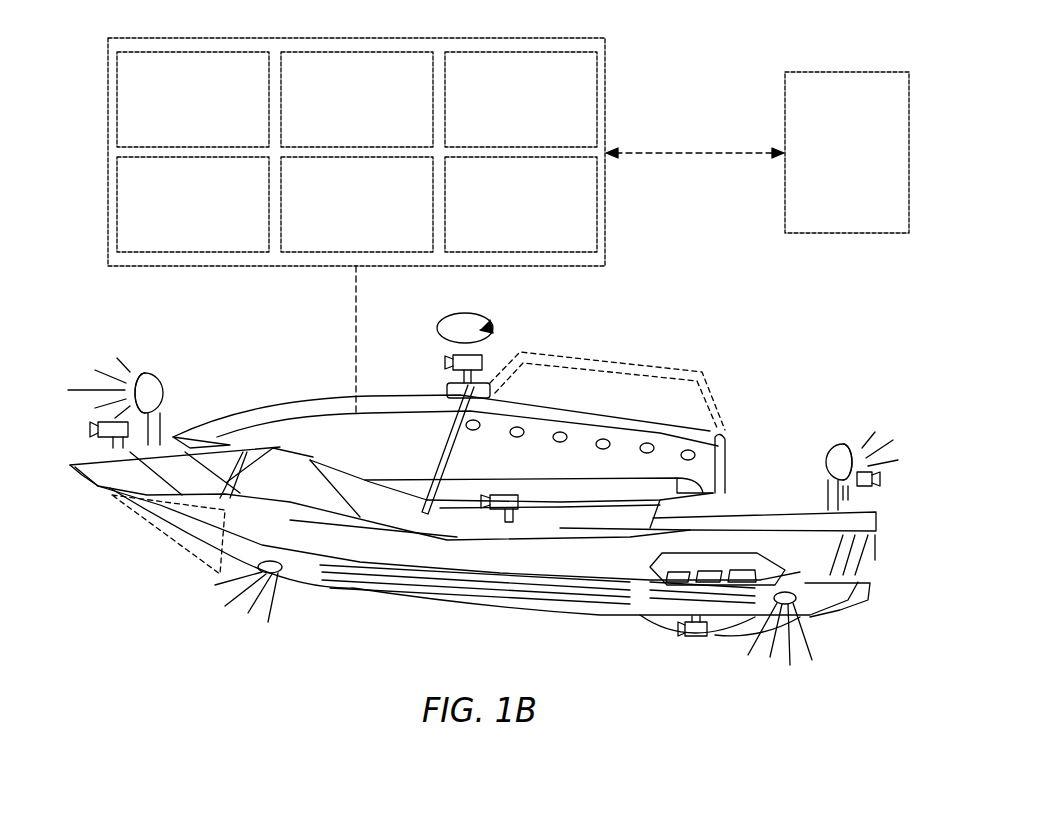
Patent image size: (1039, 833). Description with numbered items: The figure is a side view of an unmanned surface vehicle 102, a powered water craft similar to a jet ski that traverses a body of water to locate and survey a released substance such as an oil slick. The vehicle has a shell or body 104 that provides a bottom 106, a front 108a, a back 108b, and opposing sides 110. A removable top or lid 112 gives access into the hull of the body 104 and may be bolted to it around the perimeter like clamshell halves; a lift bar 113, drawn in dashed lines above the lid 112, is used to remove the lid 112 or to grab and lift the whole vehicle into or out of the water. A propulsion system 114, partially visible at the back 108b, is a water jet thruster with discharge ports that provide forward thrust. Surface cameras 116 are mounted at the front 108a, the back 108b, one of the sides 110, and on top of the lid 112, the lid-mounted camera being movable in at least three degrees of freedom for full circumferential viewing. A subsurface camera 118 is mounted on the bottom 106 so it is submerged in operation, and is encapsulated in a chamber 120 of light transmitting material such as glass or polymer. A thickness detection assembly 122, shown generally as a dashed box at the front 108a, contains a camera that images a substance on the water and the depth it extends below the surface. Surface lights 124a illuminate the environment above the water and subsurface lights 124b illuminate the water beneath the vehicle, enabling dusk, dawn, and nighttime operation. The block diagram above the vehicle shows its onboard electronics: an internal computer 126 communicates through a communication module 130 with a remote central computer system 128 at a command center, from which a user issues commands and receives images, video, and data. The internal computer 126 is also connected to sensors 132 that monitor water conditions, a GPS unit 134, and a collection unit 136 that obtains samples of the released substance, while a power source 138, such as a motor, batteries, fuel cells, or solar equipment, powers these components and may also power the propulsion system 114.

The unmanned surface vehicle 102 is at (126, 318).
The body 104 is at (382, 515).
The bottom 106 is at (598, 622).
The front 108a is at (93, 490).
The back 108b is at (888, 526).
The sides 110 is at (543, 570).
The lid 112 is at (308, 393).
The lift bar 113 is at (612, 362).
The propulsion system 114 is at (864, 592).
The surface cameras 116 is at (100, 438).
The subsurface camera 118 is at (697, 640).
The chamber 120 is at (728, 620).
The thickness detection assembly 122 is at (153, 541).
The surface lights 124a is at (158, 375).
The subsurface lights 124b is at (275, 573).
The internal computer 126 is at (521, 99).
The central computer system 128 is at (847, 152).
The communication module 130 is at (521, 204).
The sensors 132 is at (357, 99).
The GPS unit 134 is at (357, 204).
The collection unit 136 is at (193, 99).
The power source 138 is at (193, 204).